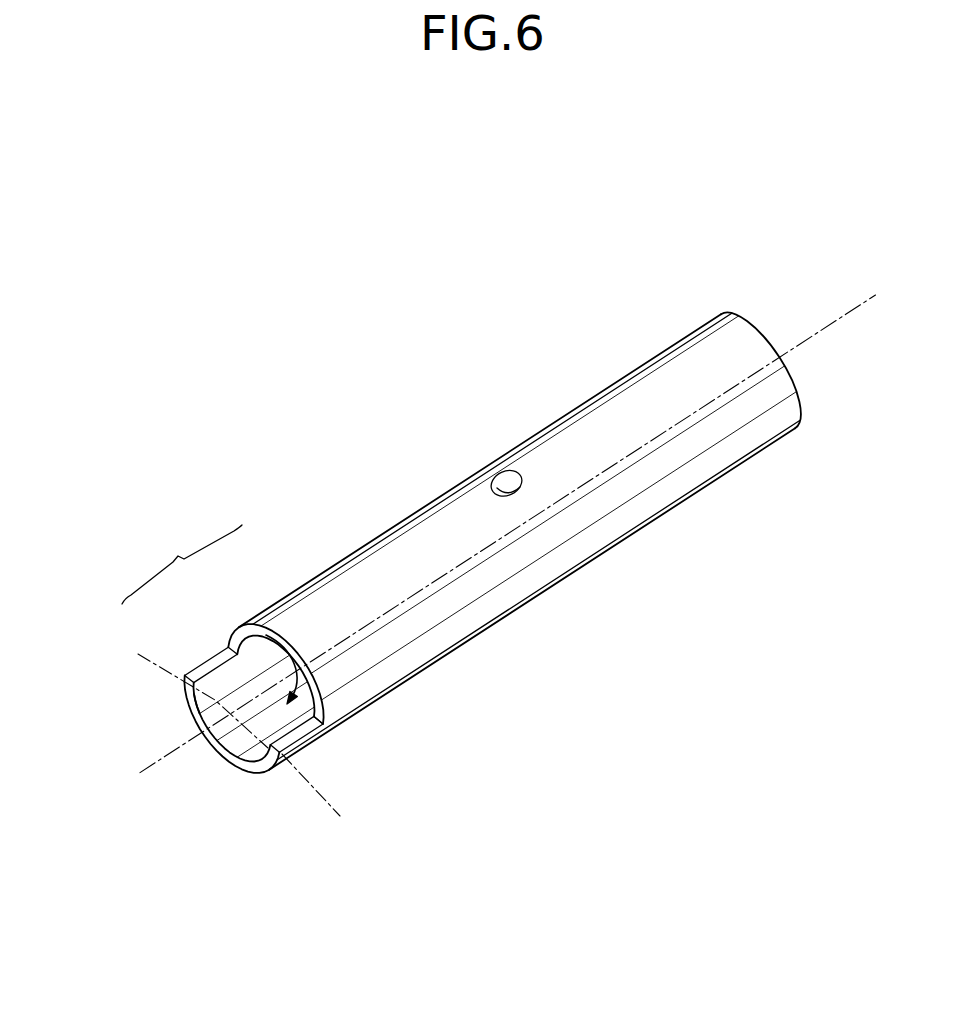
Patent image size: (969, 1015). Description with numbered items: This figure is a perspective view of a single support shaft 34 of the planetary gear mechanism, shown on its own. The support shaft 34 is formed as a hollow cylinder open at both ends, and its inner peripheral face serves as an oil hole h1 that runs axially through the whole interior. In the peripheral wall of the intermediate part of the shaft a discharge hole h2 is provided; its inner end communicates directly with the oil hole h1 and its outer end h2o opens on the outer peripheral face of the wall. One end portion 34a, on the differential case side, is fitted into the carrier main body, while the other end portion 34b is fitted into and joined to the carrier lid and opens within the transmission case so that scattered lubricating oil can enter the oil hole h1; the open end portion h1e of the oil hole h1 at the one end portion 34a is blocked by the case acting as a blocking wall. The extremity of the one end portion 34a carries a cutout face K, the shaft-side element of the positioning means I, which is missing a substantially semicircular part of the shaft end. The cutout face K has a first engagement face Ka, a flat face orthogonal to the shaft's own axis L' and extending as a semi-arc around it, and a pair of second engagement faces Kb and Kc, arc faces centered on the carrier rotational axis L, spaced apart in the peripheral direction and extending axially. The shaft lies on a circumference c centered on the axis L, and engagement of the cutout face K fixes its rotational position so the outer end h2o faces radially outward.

The support shaft 34 is at (623, 378).
The one end portion 34a is at (282, 762).
The other end portion 34b is at (782, 430).
The cutout face K is at (182, 564).
The first engagement face Ka is at (253, 632).
The second engagement face Kb is at (197, 666).
The second engagement face Kc is at (202, 679).
The oil hole h1 is at (306, 680).
The open end portion h1e is at (207, 704).
The discharge hole h2 is at (492, 479).
The outer end of discharge hole h2o is at (518, 492).
The rotational axis L is at (830, 324).
The positioning means I is at (183, 694).
The circumference c is at (327, 798).